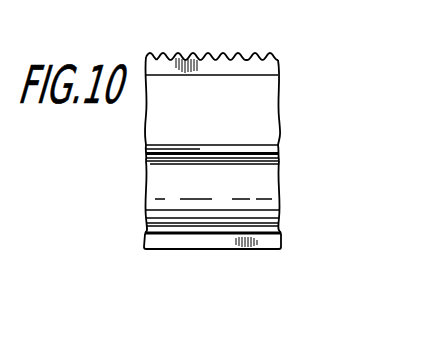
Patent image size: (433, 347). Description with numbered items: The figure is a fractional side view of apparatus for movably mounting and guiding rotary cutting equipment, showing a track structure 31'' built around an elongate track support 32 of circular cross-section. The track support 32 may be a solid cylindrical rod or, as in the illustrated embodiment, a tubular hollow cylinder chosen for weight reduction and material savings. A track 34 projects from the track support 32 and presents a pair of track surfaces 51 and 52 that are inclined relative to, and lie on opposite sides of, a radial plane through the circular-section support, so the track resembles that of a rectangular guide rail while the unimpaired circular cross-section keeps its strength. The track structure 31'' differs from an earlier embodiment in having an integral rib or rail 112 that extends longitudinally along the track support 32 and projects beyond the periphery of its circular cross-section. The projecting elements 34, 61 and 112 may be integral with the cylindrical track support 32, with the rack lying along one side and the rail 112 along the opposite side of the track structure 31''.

The projecting element 61 is at (212, 41).
The track support 32 is at (242, 101).
The track 34 is at (246, 144).
The track surface 51 is at (142, 144).
The track surface 52 is at (237, 172).
The track structure 31'' is at (175, 197).
The rail 112 is at (184, 262).